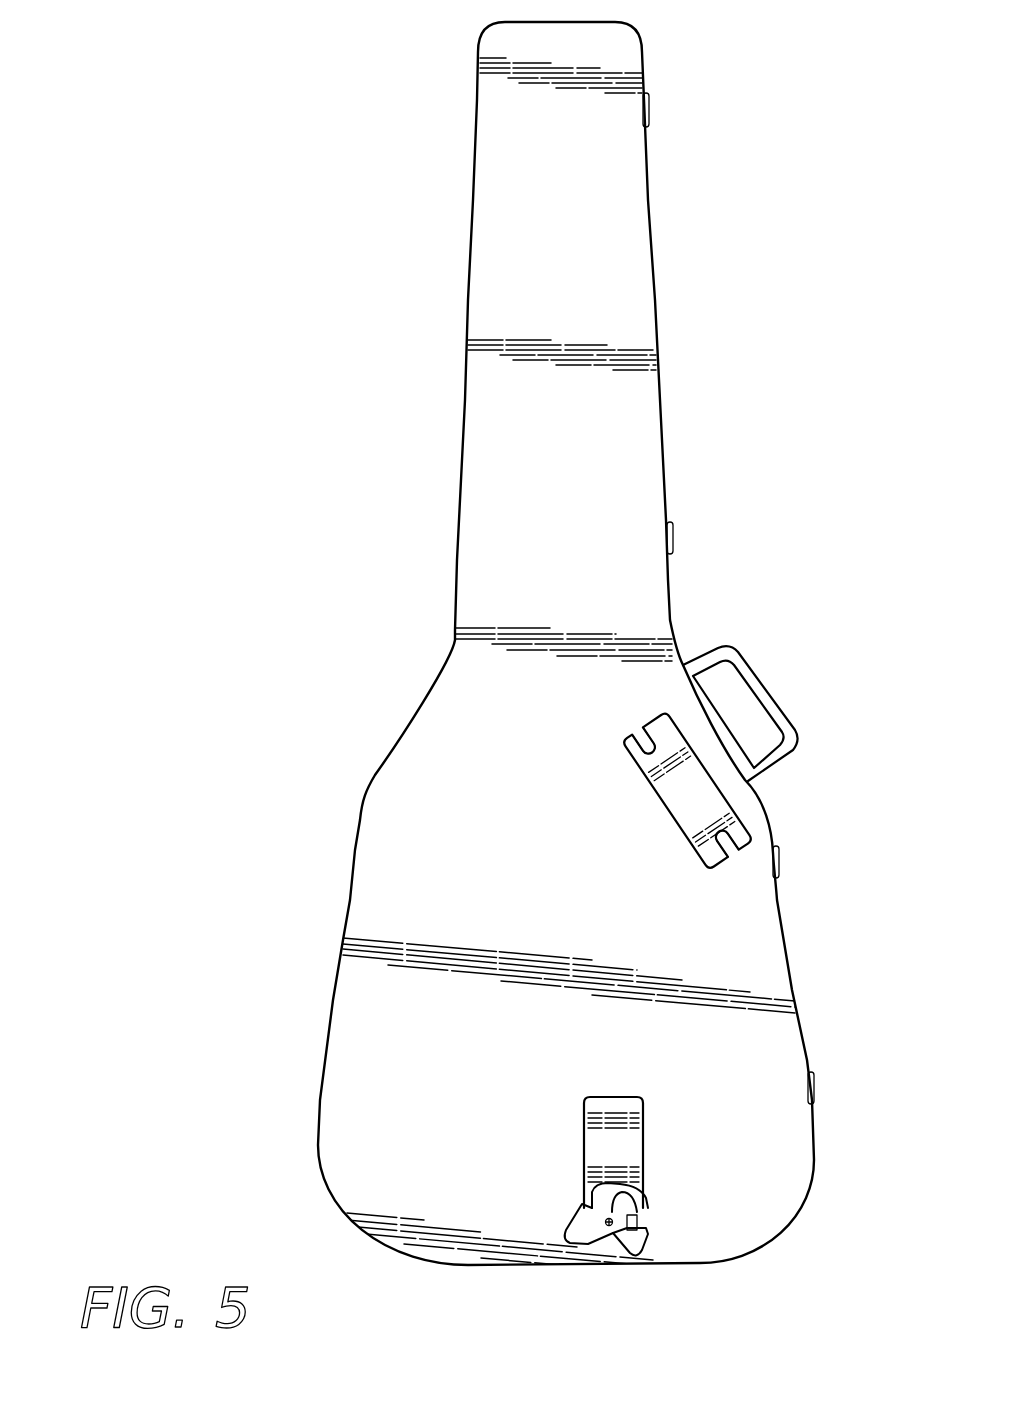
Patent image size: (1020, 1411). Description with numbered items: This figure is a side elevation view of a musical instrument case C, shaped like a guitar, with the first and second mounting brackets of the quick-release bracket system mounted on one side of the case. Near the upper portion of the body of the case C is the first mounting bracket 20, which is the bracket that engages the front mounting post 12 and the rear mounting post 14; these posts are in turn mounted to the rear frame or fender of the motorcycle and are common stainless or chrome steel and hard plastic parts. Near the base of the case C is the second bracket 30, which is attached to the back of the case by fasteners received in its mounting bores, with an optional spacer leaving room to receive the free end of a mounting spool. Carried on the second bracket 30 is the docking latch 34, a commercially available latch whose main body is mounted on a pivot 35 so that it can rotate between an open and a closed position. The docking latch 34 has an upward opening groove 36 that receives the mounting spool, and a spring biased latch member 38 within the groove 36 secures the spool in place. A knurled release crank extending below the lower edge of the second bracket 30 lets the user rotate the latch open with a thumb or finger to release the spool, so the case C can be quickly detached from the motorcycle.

The case C is at (531, 885).
The front mounting post 12 is at (735, 853).
The rear mounting post 14 is at (622, 756).
The first mounting bracket 20 is at (715, 793).
The second bracket 30 is at (638, 1148).
The docking latch 34 is at (578, 1216).
The pivot 35 is at (593, 1206).
The upward opening groove 36 is at (645, 1196).
The spring biased latch member 38 is at (640, 1216).